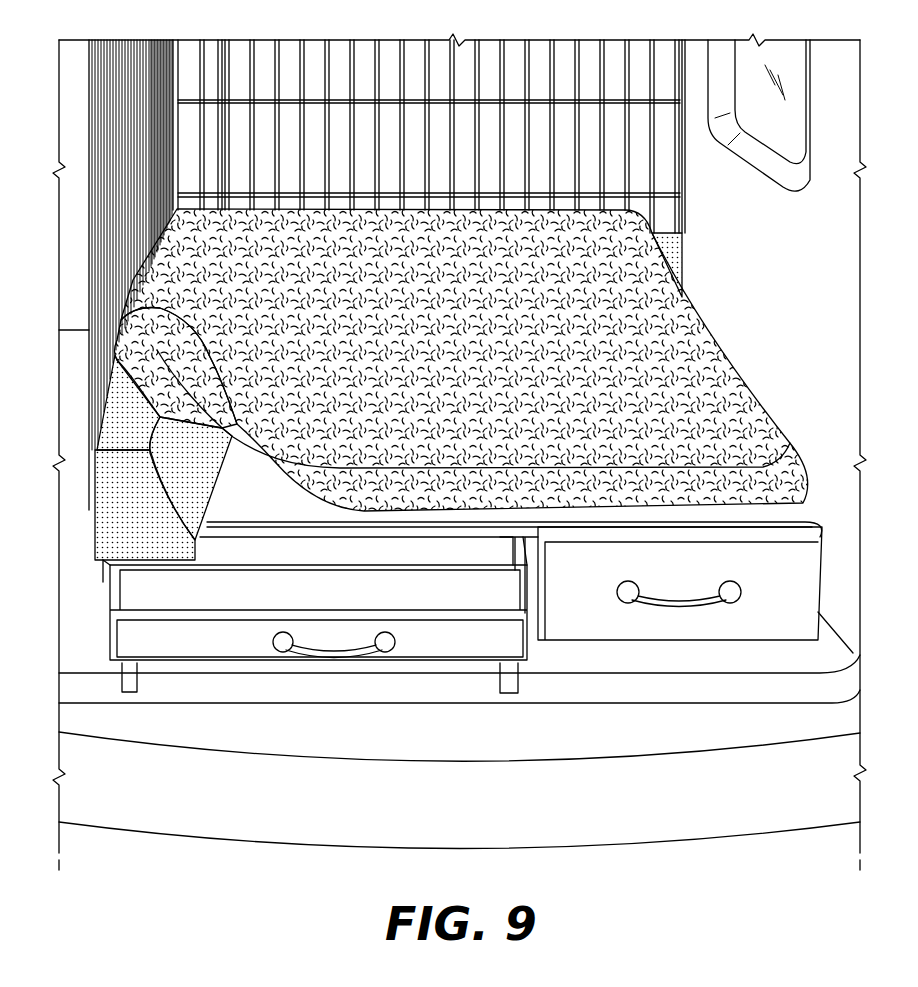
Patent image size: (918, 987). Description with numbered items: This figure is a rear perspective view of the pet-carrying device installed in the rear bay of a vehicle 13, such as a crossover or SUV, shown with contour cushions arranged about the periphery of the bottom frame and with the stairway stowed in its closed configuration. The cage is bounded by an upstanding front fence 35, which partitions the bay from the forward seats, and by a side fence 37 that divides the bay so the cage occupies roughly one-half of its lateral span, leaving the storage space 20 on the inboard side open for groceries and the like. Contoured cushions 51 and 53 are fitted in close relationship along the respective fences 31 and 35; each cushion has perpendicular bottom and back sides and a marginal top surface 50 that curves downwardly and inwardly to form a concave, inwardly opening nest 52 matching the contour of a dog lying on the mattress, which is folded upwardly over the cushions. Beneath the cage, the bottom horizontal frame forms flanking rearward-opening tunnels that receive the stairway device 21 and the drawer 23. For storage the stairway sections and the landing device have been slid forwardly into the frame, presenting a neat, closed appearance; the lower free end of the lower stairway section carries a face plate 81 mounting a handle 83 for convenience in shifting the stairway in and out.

The vehicle 13 is at (217, 840).
The storage space 20 is at (809, 316).
The stairway device 21 is at (462, 631).
The drawer 23 is at (714, 648).
The side fence 31 is at (85, 241).
The front fence 35 is at (678, 164).
The side fence 37 is at (212, 68).
The marginal top surface 50 is at (141, 432).
The contoured cushion 51 is at (120, 513).
The nest 52 is at (199, 469).
The contoured cushion 53 is at (682, 272).
The face plate 81 is at (213, 652).
The handle 83 is at (340, 645).